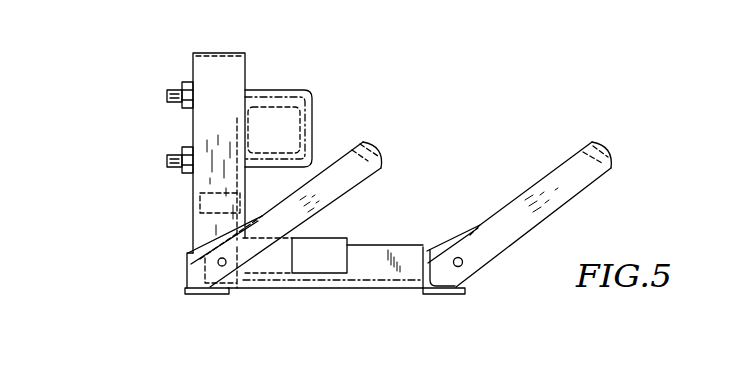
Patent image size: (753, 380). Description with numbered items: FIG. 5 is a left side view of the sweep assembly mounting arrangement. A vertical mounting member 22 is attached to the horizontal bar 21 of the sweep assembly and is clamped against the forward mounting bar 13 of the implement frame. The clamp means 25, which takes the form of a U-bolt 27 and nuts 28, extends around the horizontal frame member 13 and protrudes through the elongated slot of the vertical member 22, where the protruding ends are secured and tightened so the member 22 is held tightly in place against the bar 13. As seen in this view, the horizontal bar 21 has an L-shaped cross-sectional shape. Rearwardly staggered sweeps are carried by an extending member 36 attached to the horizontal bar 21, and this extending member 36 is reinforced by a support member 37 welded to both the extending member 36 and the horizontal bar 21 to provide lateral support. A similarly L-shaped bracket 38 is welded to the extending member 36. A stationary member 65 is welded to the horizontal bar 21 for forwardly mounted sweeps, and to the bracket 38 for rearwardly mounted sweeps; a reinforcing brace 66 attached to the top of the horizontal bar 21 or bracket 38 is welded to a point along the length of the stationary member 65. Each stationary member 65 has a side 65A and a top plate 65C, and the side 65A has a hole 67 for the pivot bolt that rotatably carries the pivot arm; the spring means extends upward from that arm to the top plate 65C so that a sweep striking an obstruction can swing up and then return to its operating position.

The forward mounting bar 13 is at (245, 128).
The horizontal bar 21 is at (186, 275).
The mounting member 22 is at (232, 68).
The clamp means 25 is at (311, 97).
The U-bolt 27 is at (313, 124).
The nuts 28 is at (187, 83).
The extending member 36 is at (373, 245).
The support member 37 is at (316, 238).
The bracket 38 is at (451, 295).
The stationary member 65 is at (433, 198).
The side 65A is at (346, 188).
The top plate 65C is at (380, 147).
The gusset 66 is at (218, 240).
The hole 67 is at (221, 266).